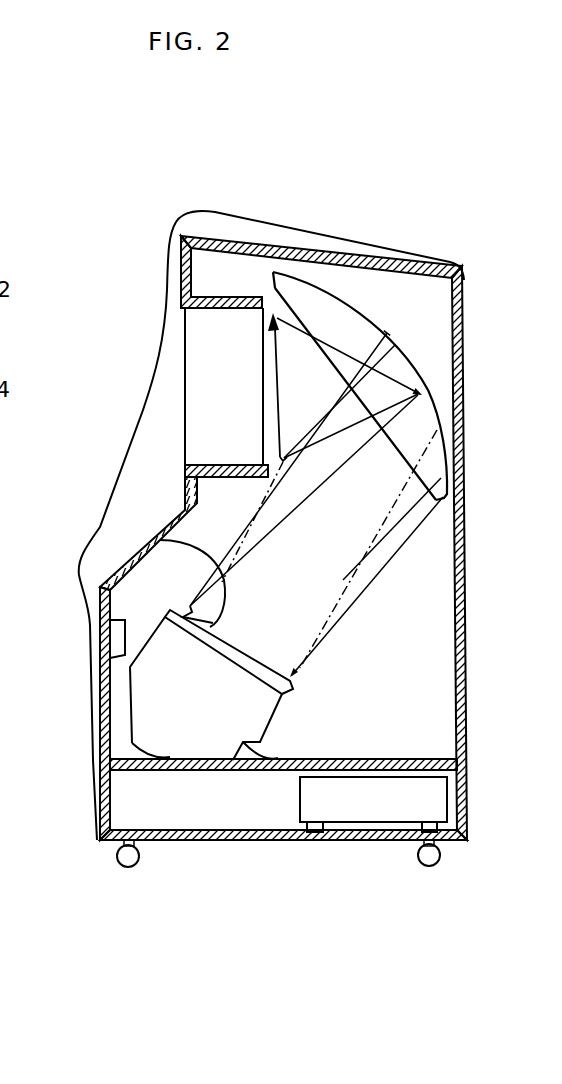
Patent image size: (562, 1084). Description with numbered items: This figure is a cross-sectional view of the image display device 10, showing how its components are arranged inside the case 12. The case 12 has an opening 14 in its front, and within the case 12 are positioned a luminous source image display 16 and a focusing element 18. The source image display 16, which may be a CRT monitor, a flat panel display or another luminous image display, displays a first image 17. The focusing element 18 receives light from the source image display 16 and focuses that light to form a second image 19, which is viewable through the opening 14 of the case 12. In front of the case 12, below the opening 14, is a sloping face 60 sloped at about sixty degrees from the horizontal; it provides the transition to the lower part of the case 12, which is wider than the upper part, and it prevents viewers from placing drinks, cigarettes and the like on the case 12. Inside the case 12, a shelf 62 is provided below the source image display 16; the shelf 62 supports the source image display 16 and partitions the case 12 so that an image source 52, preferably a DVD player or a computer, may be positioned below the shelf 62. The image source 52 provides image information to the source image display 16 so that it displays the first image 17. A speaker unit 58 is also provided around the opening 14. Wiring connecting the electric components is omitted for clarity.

The image display device 10 is at (331, 198).
The case 12 is at (90, 826).
The opening 14 is at (236, 311).
The luminous source image display 16 is at (255, 745).
The first image 17 is at (200, 549).
The focusing element 18 is at (331, 289).
The second image 19 is at (276, 388).
The image source 52 is at (302, 804).
The speaker unit 58 is at (97, 657).
The sloping face 60 is at (118, 566).
The shelf 62 is at (110, 738).